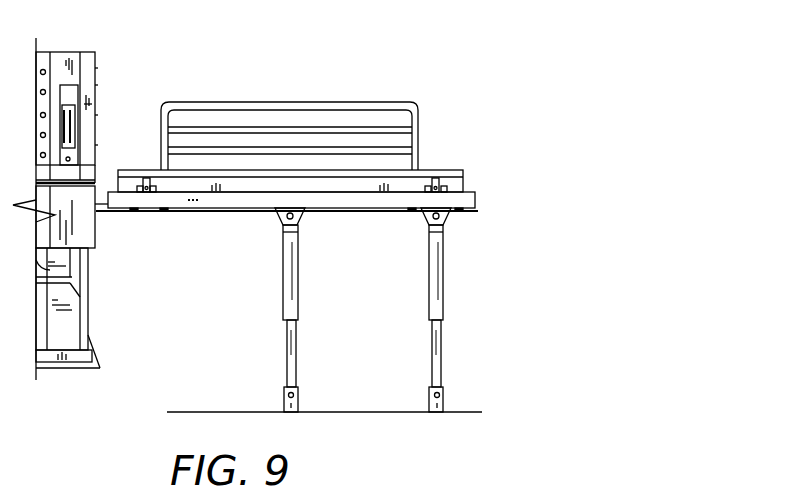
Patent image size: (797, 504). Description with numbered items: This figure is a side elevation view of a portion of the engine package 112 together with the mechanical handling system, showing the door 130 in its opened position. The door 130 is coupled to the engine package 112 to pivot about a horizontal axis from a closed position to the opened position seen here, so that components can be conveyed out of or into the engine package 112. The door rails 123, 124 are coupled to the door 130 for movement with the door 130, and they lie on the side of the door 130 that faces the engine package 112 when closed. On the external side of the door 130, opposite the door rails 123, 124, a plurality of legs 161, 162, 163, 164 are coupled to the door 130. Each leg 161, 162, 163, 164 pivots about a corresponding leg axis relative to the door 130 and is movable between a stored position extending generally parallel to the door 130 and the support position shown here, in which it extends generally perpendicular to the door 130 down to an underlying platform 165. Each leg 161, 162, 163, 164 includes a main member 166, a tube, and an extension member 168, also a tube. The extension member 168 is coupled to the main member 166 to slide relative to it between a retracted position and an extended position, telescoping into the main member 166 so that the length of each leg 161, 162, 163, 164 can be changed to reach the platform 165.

The engine package 112 is at (100, 64).
The door rail 123 is at (356, 147).
The door rail 124 is at (453, 160).
The door 130 is at (490, 192).
The leg 161 is at (523, 298).
The leg 162 is at (455, 239).
The leg 163 is at (212, 310).
The leg 164 is at (260, 297).
The underlying platform 165 is at (465, 412).
The main member 166 is at (306, 294).
The extension member 168 is at (306, 352).